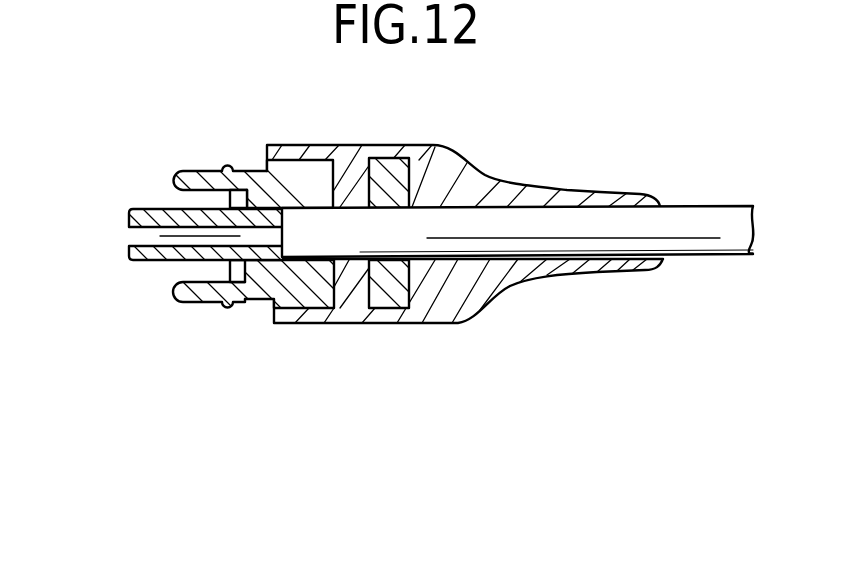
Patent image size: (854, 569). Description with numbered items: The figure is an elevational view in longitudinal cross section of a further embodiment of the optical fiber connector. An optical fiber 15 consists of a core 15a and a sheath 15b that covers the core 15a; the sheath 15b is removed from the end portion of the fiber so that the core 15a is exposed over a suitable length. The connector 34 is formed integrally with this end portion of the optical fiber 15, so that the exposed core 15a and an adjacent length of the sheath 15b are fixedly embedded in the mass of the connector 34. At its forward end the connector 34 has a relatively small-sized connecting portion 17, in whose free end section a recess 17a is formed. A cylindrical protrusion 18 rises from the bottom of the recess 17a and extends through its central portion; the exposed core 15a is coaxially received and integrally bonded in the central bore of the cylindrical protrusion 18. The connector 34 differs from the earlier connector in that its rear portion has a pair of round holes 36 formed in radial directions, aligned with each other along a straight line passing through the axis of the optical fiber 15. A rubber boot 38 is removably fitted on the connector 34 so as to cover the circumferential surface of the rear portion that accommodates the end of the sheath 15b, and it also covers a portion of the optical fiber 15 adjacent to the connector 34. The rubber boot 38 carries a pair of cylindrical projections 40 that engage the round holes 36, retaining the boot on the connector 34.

The optical fiber 15 is at (463, 222).
The core 15a is at (137, 238).
The sheath 15b is at (697, 249).
The connecting portion 17 is at (195, 289).
The recess 17a is at (177, 190).
The cylindrical protrusion 18 is at (139, 208).
The connector 34 is at (265, 283).
The round holes 36 is at (366, 174).
The rubber boot 38 is at (438, 172).
The cylindrical projections 40 is at (344, 184).